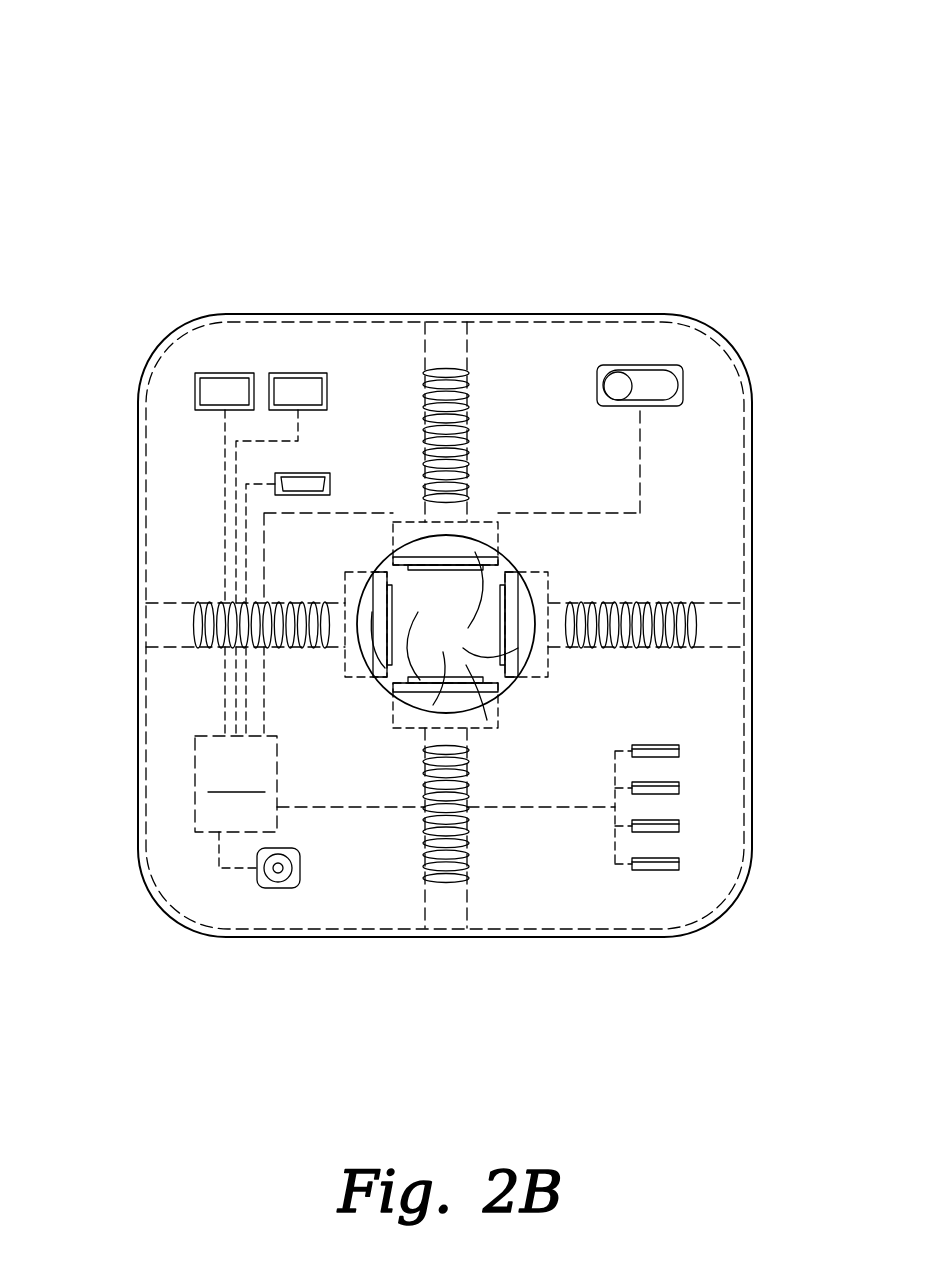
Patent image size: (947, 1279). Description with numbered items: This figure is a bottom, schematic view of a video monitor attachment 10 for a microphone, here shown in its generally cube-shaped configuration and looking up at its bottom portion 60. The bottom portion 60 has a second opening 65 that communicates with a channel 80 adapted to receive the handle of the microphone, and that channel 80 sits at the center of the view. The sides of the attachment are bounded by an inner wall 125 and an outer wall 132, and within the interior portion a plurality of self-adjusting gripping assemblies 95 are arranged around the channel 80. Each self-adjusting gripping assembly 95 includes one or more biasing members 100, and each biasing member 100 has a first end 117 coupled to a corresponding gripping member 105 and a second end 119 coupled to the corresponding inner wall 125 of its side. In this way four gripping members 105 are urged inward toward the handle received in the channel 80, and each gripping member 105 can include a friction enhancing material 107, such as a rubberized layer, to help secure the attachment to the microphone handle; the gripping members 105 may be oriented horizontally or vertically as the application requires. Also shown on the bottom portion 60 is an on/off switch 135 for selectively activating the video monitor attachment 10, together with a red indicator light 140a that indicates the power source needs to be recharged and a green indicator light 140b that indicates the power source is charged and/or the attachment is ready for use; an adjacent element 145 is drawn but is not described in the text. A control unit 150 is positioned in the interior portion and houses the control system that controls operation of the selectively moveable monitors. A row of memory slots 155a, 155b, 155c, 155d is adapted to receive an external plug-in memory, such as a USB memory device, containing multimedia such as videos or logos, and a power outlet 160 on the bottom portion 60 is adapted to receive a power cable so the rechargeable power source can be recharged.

The video monitor attachment 10 is at (165, 86).
The bottom portion 60 is at (382, 460).
The second opening 65 is at (468, 663).
The channel 80 is at (494, 637).
The self-adjusting gripping assembly 95 is at (512, 422).
The biasing member 100 is at (470, 420).
The gripping member 105 is at (493, 628).
The friction enhancing material 107 is at (478, 568).
The first end 117 is at (393, 525).
The second end 119 is at (458, 348).
The inner wall 125 is at (393, 322).
The outer wall 132 is at (352, 314).
The on/off switch 135 is at (640, 365).
The red indicator light 140a is at (226, 373).
The green indicator light 140b is at (300, 373).
The sensor 145 is at (277, 476).
The control unit 150 is at (236, 739).
The memory slot 155a is at (679, 751).
The memory slot 155b is at (679, 788).
The memory slot 155c is at (679, 826).
The memory slot 155d is at (679, 864).
The power outlet 160 is at (303, 852).